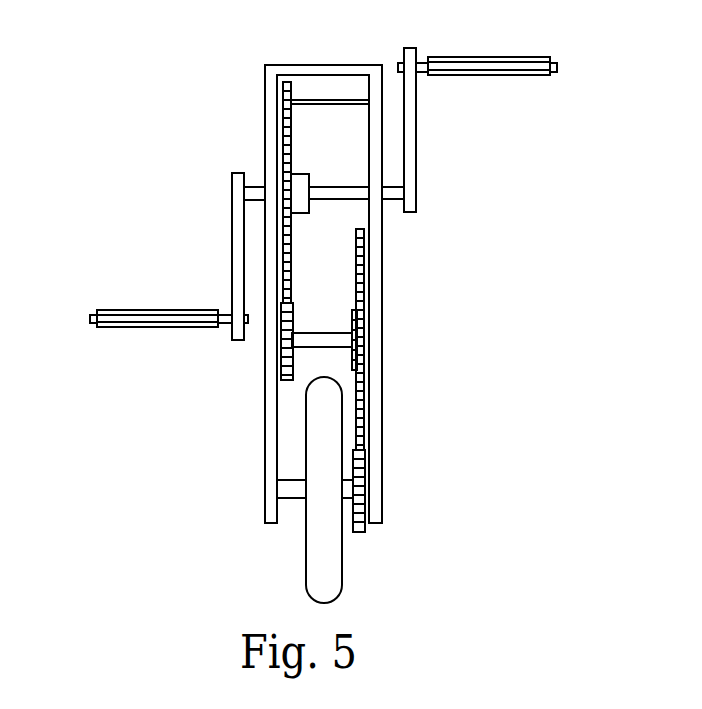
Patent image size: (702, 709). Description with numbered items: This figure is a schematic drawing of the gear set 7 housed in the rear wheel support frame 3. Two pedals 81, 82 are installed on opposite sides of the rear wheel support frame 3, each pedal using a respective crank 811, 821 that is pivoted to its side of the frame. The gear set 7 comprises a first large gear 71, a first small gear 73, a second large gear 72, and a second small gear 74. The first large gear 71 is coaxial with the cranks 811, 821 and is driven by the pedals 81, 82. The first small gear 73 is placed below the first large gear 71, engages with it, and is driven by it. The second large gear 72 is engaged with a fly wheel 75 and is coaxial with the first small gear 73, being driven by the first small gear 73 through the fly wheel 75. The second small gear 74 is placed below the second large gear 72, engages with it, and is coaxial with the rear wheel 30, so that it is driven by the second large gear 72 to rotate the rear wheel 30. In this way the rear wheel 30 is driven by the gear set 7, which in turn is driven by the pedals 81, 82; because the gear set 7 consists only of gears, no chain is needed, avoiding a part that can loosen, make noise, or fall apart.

The rear wheel support frame 3 is at (313, 72).
The gear set 7 is at (277, 155).
The first large gear 71 is at (287, 118).
The second large gear 72 is at (362, 265).
The first small gear 73 is at (285, 358).
The second small gear 74 is at (358, 476).
The fly wheel 75 is at (354, 325).
The rear wheel 30 is at (320, 535).
The pedal 81 is at (517, 75).
The crank 811 is at (412, 142).
The pedal 82 is at (120, 313).
The crank 821 is at (238, 245).